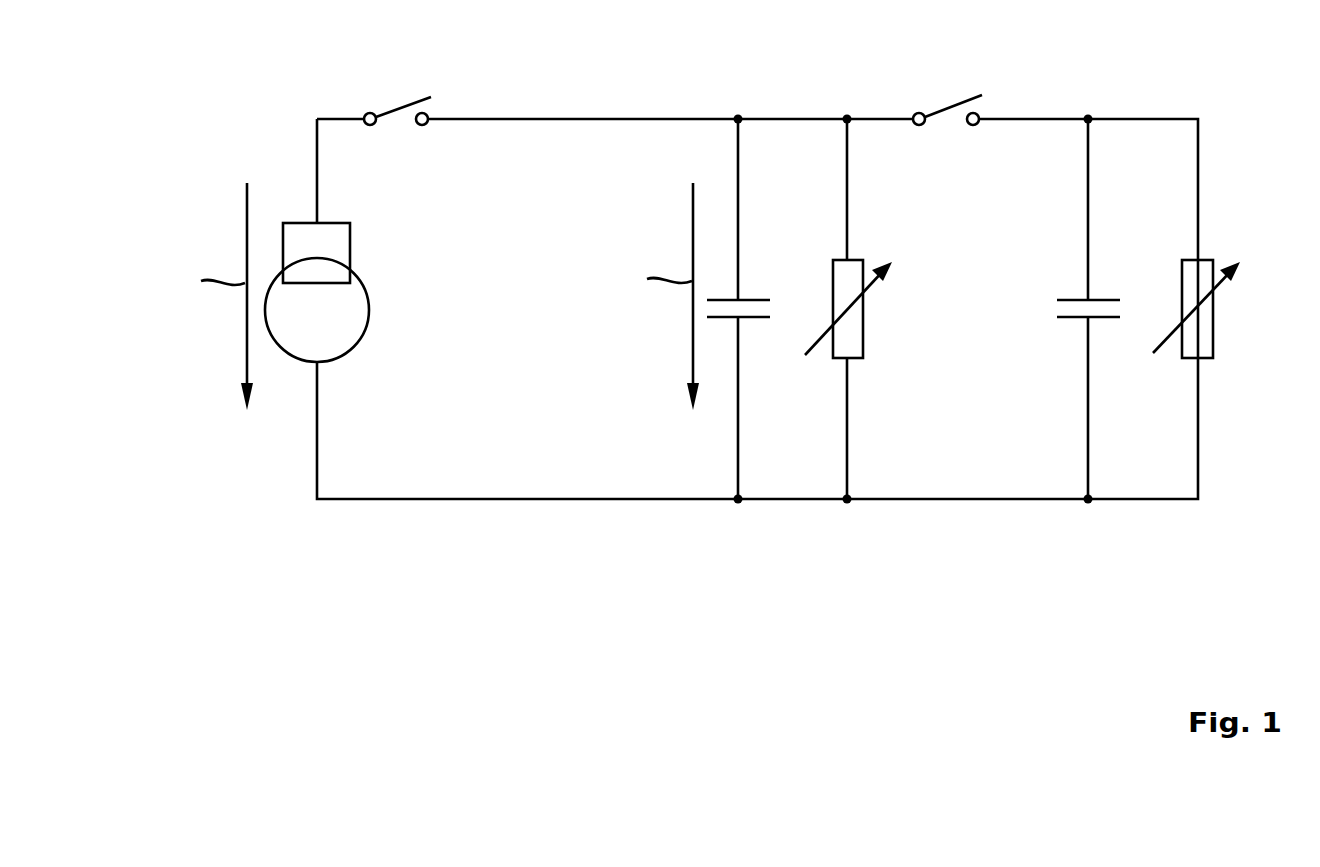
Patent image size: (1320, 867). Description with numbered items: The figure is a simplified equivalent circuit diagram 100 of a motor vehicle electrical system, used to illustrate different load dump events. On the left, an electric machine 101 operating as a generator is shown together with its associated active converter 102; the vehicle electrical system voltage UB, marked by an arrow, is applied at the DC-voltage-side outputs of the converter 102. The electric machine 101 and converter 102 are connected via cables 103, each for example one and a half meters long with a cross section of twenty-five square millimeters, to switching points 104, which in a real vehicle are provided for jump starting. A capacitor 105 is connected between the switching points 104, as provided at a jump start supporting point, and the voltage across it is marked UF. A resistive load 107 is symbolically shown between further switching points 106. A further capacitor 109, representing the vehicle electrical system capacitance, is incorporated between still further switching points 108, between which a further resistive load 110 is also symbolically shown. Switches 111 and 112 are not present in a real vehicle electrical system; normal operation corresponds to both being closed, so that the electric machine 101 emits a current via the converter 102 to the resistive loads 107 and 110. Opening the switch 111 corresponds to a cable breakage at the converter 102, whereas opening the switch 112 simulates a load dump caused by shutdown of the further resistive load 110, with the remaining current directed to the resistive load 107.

The equivalent circuit diagram 100 is at (1165, 568).
The electric machine 101 is at (369, 311).
The active converter 102 is at (351, 246).
The cables 103 is at (578, 119).
The switching points 104 is at (738, 119).
The capacitor 105 is at (752, 280).
The further switching points 106 is at (847, 119).
The resistive load 107 is at (890, 346).
The still further switching points 108 is at (1088, 119).
The further capacitor 109 is at (1070, 280).
The further resistive load 110 is at (1214, 321).
The switch 111 is at (395, 92).
The switch 112 is at (945, 92).